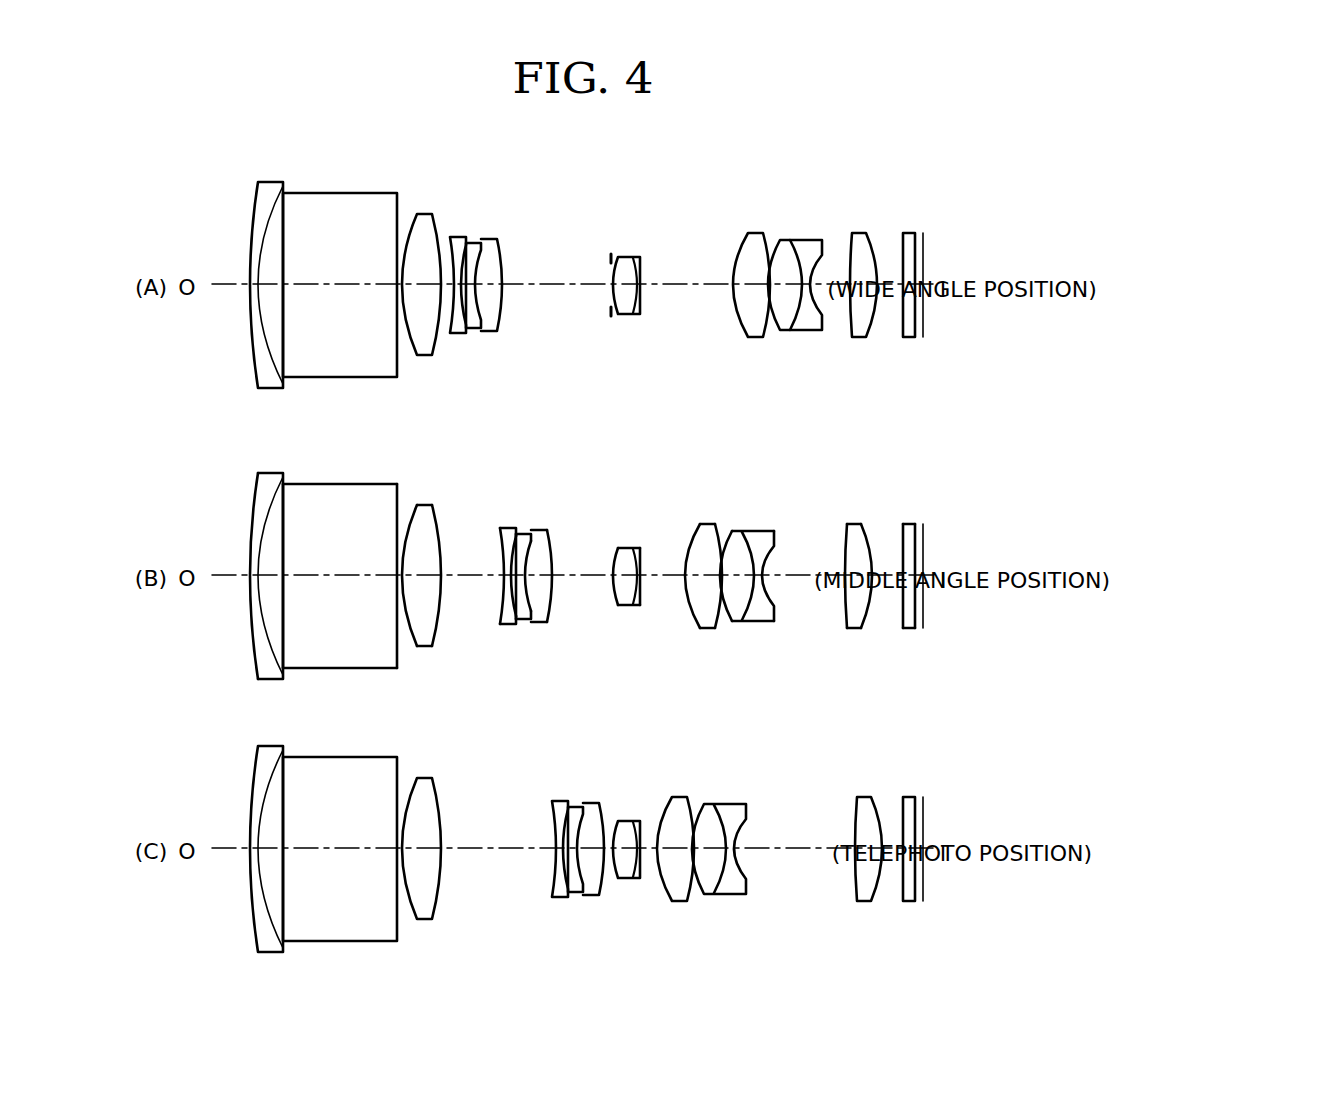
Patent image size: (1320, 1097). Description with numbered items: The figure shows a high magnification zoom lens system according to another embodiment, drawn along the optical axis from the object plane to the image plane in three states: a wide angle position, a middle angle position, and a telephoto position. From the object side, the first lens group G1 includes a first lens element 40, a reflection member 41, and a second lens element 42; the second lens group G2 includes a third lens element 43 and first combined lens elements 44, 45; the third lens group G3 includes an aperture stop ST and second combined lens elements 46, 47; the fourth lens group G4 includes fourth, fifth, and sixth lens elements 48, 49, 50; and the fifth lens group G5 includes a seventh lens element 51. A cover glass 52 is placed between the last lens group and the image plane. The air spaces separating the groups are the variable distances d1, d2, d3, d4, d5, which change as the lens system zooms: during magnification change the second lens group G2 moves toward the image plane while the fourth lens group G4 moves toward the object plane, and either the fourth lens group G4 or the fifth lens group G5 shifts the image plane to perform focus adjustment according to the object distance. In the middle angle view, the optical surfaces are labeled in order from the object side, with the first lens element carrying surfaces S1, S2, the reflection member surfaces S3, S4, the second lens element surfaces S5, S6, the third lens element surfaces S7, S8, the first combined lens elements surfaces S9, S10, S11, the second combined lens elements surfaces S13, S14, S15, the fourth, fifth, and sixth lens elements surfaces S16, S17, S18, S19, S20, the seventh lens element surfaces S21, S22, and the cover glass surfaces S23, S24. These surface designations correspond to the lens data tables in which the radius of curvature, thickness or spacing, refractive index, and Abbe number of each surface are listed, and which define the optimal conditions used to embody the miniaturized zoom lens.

The first lens element 40 is at (270, 390).
The reflection member 41 is at (337, 378).
The second lens element 42 is at (421, 356).
The third lens element 43 is at (455, 334).
The first combined lens element 44 is at (480, 329).
The first combined lens element 45 is at (500, 332).
The second combined lens element 46 is at (620, 315).
The second combined lens element 47 is at (636, 315).
The fourth lens element 48 is at (755, 338).
The fifth lens element 49 is at (784, 331).
The sixth lens element 50 is at (812, 331).
The seventh lens element 51 is at (862, 338).
The cover glass 52 is at (908, 338).
The aperture stop ST is at (609, 257).
The first lens group G1 is at (248, 173).
The second lens group G2 is at (502, 173).
The third lens group G3 is at (592, 173).
The fourth lens group G4 is at (735, 173).
The fifth lens group G5 is at (833, 173).
The variable distance d1 is at (443, 285).
The variable distance d2 is at (545, 285).
The variable distance d3 is at (690, 285).
The variable distance d4 is at (837, 285).
The variable distance d5 is at (890, 285).
The lens surface 1 S1 is at (250, 626).
The lens surface 2 S2 is at (276, 648).
The lens surface 3 S3 is at (284, 627).
The lens surface 4 S4 is at (395, 646).
The lens surface 5 S5 is at (411, 636).
The lens surface 6 S6 is at (437, 626).
The lens surface 7 S7 is at (500, 600).
The lens surface 8 S8 is at (512, 606).
The lens surface 9 S9 is at (527, 606).
The lens surface 10 S10 is at (527, 538).
The lens surface 11 S11 is at (553, 546).
The lens surface 13 S13 is at (613, 592).
The lens surface 14 S14 is at (625, 604).
The lens surface 15 S15 is at (640, 596).
The lens surface 16 S16 is at (690, 546).
The lens surface 17 S17 is at (722, 540).
The lens surface 18 S18 is at (731, 535).
The lens surface 19 S19 is at (752, 621).
The lens surface 20 S20 is at (773, 600).
The lens surface 21 S21 is at (848, 546).
The lens surface 22 S22 is at (870, 540).
The lens surface 23 S23 is at (905, 612).
The lens surface 24 S24 is at (918, 613).